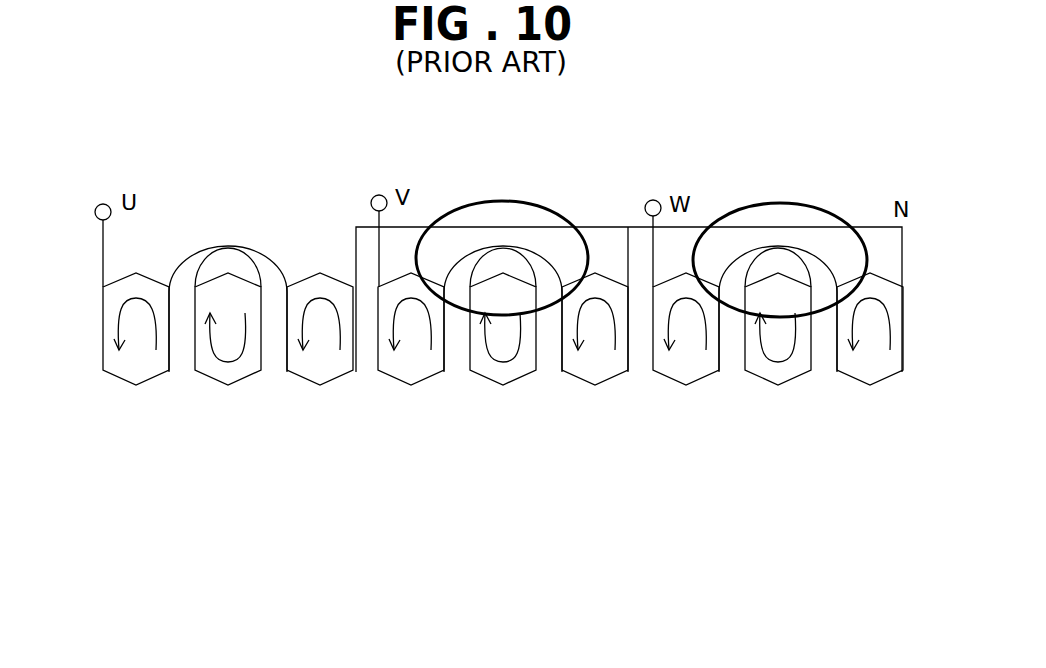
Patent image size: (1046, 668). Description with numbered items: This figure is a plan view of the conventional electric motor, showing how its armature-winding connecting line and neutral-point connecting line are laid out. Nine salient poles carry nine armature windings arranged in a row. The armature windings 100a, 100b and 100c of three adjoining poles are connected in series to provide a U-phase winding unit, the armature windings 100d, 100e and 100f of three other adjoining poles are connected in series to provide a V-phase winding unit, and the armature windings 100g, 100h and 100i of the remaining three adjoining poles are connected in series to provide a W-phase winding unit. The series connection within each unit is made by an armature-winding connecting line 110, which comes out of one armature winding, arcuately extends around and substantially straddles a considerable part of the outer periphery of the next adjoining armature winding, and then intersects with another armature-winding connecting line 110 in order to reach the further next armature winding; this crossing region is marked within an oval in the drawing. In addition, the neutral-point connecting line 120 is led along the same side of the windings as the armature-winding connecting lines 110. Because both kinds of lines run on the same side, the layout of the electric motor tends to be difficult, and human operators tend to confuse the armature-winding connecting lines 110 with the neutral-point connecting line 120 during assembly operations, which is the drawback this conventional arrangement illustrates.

The armature winding 100a is at (116, 379).
The armature winding 100b is at (208, 379).
The armature winding 100c is at (300, 379).
The armature winding 100d is at (391, 379).
The armature winding 100e is at (483, 379).
The armature winding 100f is at (575, 379).
The armature winding 100g is at (666, 379).
The armature winding 100h is at (758, 379).
The armature winding 100i is at (850, 379).
The armature-winding connecting line 110 is at (193, 247).
The neutral-point connecting line 120 is at (603, 227).